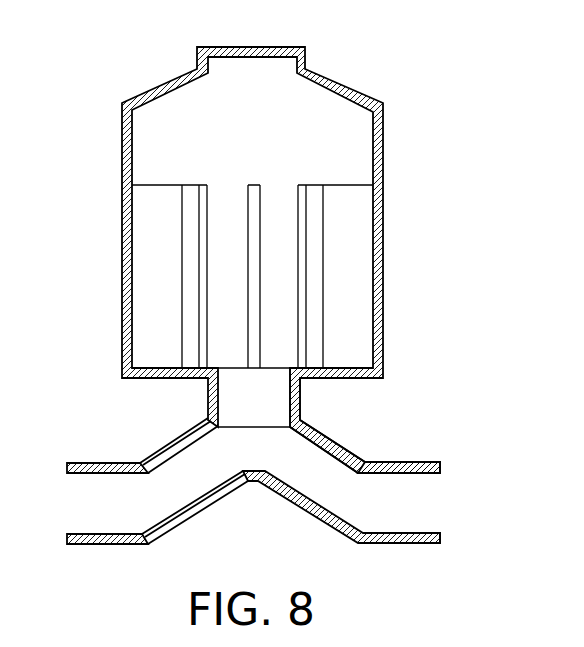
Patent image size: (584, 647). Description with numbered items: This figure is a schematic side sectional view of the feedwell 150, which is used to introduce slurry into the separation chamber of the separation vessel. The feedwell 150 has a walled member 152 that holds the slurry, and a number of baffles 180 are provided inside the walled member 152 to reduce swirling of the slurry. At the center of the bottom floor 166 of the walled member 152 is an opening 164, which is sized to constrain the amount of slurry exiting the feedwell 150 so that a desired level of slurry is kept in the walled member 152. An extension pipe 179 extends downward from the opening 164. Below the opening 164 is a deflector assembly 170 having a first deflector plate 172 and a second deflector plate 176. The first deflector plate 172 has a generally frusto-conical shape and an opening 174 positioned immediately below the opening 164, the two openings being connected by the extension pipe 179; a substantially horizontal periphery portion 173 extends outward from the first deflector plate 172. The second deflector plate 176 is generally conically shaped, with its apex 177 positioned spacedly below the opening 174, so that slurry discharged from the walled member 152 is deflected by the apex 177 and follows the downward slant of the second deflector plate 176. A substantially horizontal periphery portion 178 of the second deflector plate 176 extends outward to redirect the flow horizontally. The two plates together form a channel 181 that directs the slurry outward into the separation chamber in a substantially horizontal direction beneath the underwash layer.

The feedwell 150 is at (405, 61).
The walled member 152 is at (122, 161).
The baffles 180 is at (252, 185).
The bottom floor 166 is at (172, 365).
The opening 164 is at (272, 370).
The extension pipe 179 is at (299, 398).
The deflector assembly 170 is at (487, 461).
The first deflector plate 172 is at (327, 433).
The substantially horizontal periphery portion 173 is at (110, 463).
The opening 174 is at (237, 428).
The channel 181 is at (405, 505).
The second deflector plate 176 is at (208, 505).
The apex 177 is at (262, 465).
The substantially horizontal periphery portion 178 is at (107, 534).